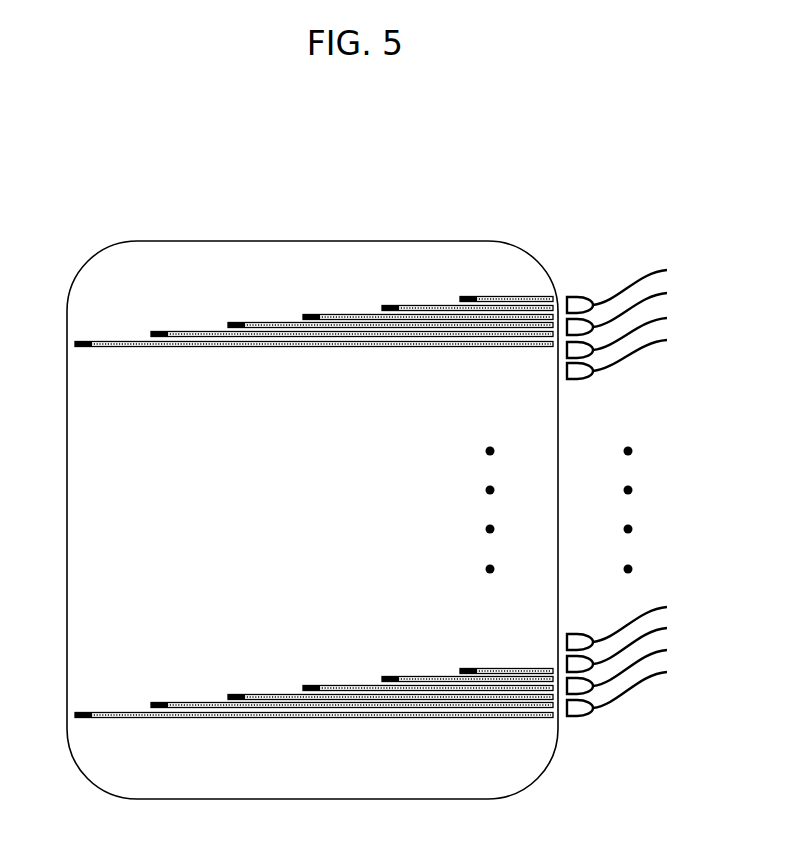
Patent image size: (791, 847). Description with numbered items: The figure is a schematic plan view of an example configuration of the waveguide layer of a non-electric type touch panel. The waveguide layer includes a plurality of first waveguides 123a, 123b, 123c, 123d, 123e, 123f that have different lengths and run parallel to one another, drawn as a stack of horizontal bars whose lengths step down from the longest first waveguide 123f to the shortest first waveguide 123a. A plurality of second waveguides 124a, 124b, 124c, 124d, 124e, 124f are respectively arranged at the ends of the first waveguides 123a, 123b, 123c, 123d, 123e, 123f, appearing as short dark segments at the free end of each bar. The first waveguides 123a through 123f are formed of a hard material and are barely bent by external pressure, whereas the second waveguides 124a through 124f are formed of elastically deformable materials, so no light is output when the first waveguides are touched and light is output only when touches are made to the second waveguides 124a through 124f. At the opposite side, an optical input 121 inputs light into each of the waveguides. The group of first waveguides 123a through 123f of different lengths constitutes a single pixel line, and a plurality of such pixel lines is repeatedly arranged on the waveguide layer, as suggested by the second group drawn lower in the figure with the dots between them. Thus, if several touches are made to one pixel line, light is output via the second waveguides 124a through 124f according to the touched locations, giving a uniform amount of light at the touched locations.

The optical input 121 is at (579, 303).
The first waveguide 123a is at (512, 296).
The first waveguide 123b is at (430, 305).
The first waveguide 123c is at (352, 314).
The first waveguide 123d is at (275, 322).
The first waveguide 123e is at (195, 331).
The first waveguide 123f is at (115, 341).
The second waveguide 124a is at (472, 296).
The second waveguide 124b is at (392, 305).
The second waveguide 124c is at (312, 314).
The second waveguide 124d is at (238, 322).
The second waveguide 124e is at (158, 331).
The second waveguide 124f is at (83, 341).